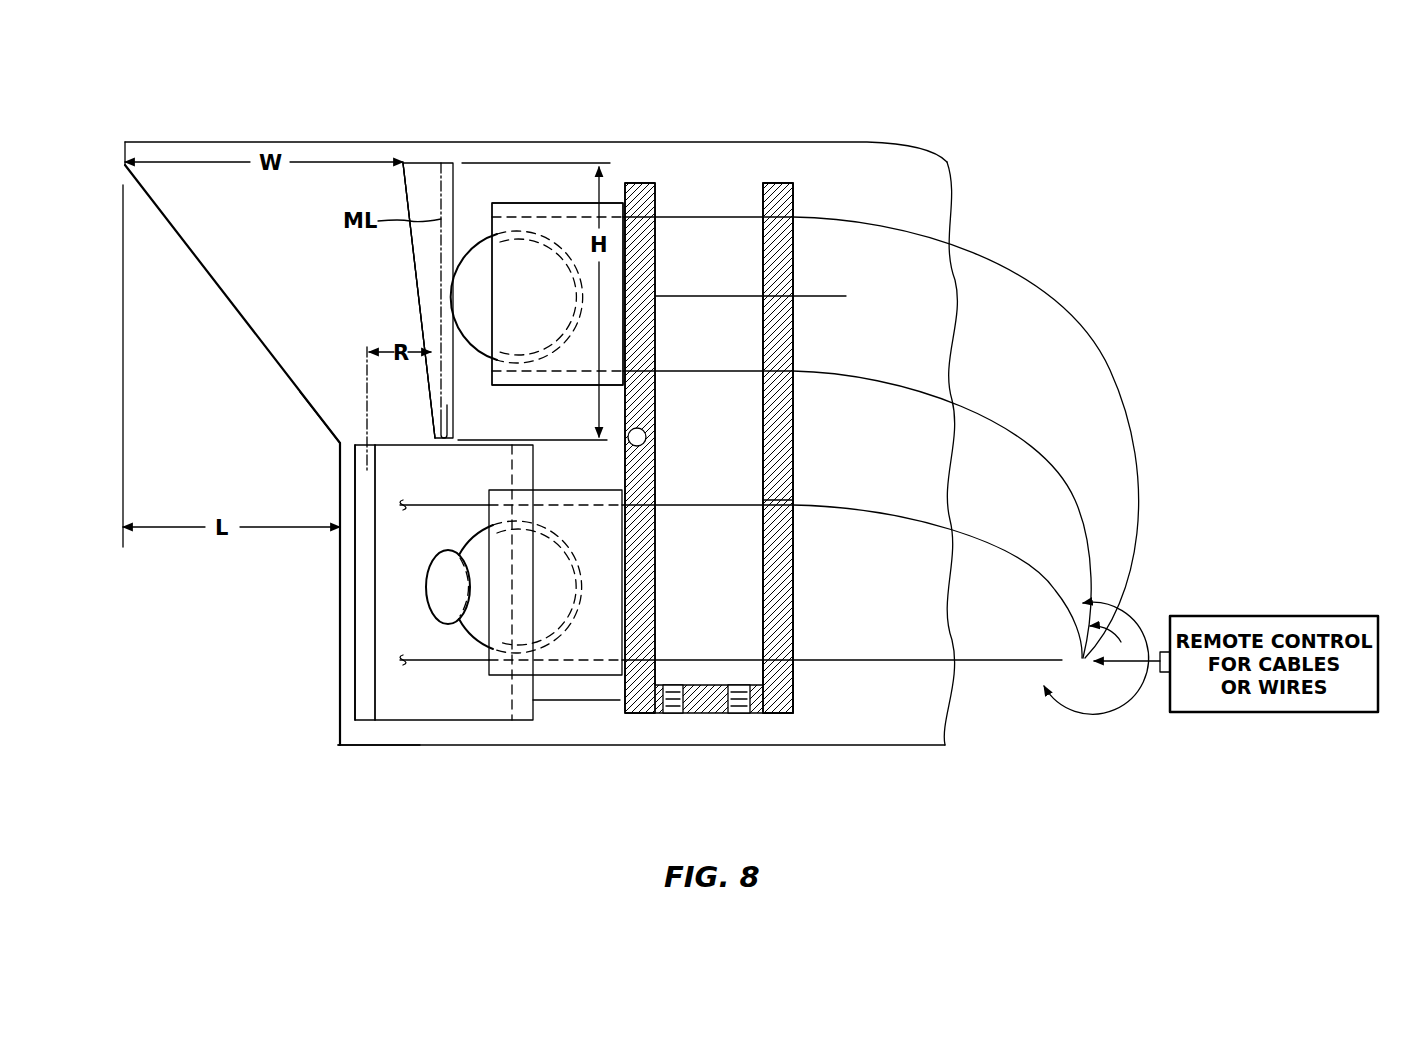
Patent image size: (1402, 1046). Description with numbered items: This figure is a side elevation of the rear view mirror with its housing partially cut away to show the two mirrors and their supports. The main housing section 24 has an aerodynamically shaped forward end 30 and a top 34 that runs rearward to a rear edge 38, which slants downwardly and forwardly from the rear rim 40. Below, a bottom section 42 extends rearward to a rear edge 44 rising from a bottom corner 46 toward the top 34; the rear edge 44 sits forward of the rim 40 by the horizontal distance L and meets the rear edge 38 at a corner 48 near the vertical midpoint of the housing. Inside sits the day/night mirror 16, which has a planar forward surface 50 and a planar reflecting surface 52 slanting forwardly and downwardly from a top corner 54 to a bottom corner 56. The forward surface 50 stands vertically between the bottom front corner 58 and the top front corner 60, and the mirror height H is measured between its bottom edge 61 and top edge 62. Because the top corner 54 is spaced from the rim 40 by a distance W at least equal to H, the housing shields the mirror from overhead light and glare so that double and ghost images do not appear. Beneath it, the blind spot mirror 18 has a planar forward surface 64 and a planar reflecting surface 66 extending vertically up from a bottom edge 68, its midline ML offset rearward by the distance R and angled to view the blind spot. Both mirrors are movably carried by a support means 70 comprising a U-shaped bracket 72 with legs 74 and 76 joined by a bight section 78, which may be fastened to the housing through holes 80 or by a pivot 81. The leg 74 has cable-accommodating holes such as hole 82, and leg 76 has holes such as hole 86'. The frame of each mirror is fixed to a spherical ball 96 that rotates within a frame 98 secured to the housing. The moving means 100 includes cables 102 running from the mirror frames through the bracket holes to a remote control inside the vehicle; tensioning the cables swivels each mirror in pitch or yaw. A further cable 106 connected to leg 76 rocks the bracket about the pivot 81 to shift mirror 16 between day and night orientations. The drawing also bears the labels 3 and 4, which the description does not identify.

The display assembly 3 is at (563, 705).
The bracket 4 is at (798, 240).
The day/night mirror 16 is at (408, 256).
The blind spot mirror 18 is at (350, 580).
The main housing section 24 is at (882, 140).
The forward end 30 is at (176, 326).
The top 34 is at (232, 142).
The rear edge 38 is at (205, 263).
The rear rim 40 is at (125, 140).
The bottom section 42 is at (433, 727).
The rear edge 44 is at (338, 680).
The bottom corner 46 is at (338, 746).
The corner 48 is at (338, 430).
The planar forward surface 50 is at (457, 173).
The planar reflecting surface 52 is at (416, 290).
The top corner 54 is at (402, 163).
The bottom corner 56 is at (432, 439).
The bottom front corner 58 is at (452, 438).
The top front corner 60 is at (447, 162).
The bottom edge 61 is at (449, 410).
The top edge 62 is at (417, 163).
The planar forward surface 64 is at (389, 522).
The planar reflecting surface 66 is at (352, 626).
The bottom edge 68 is at (362, 719).
The support means 70 is at (753, 162).
The U-shaped bracket 72 is at (797, 448).
The leg 74 is at (797, 562).
The leg 76 is at (658, 238).
The bight section 78 is at (705, 714).
The holes 80 is at (673, 714).
The pivot 81 is at (648, 437).
The cable-accommodating hole 82 is at (793, 634).
The cable-accommodating hole 86' is at (672, 448).
The spherical ball 96 is at (470, 312).
The frame 98 is at (547, 387).
The moving means 100 is at (543, 178).
The cables 102 is at (468, 210).
The cable 106 is at (817, 297).